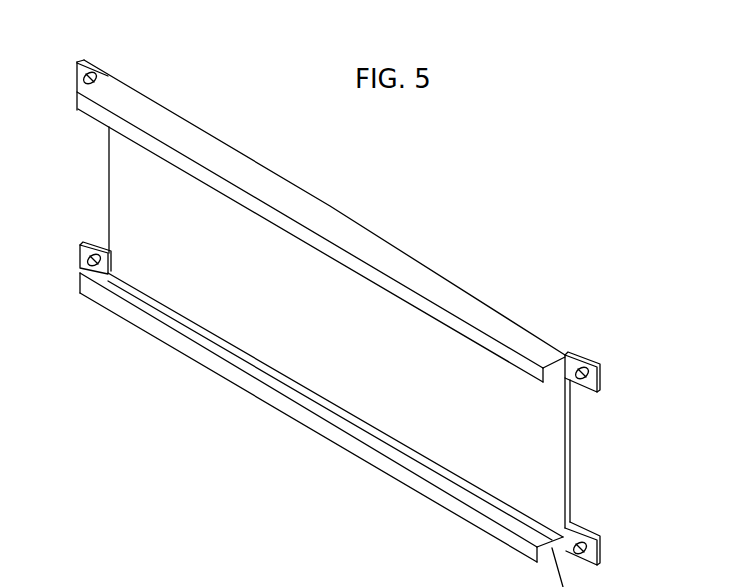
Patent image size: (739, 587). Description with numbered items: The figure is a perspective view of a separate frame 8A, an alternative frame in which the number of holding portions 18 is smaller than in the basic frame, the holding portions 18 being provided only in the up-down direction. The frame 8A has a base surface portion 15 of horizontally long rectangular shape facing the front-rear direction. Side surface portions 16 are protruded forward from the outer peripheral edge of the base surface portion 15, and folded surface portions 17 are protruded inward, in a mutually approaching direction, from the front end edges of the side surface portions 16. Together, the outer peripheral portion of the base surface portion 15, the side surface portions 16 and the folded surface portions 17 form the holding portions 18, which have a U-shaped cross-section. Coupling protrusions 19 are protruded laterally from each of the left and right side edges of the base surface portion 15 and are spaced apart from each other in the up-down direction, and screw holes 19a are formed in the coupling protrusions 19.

The frame 8A is at (670, 72).
The base surface portion 15 is at (560, 446).
The side surface portion 16 is at (377, 240).
The folded surface portion 17 is at (95, 119).
The holding portion 18 is at (427, 281).
The coupling protrusion 19 is at (105, 72).
The screw hole 19a is at (98, 70).